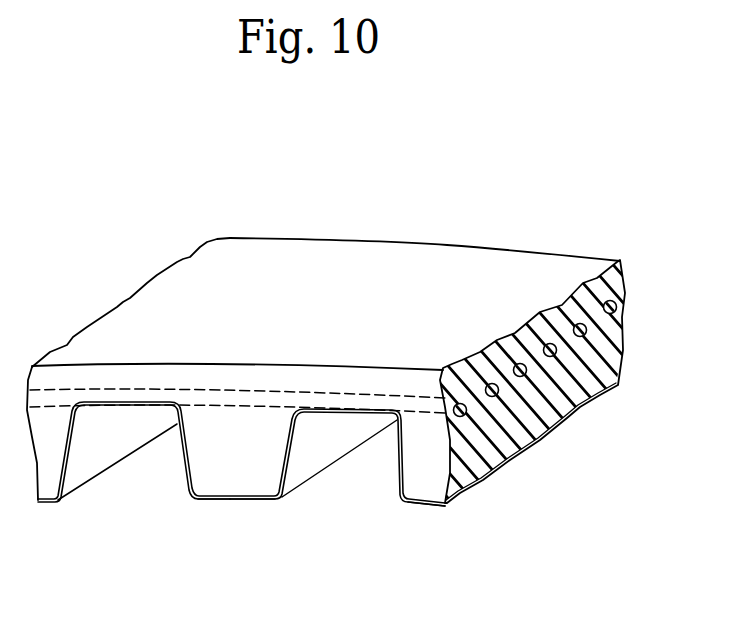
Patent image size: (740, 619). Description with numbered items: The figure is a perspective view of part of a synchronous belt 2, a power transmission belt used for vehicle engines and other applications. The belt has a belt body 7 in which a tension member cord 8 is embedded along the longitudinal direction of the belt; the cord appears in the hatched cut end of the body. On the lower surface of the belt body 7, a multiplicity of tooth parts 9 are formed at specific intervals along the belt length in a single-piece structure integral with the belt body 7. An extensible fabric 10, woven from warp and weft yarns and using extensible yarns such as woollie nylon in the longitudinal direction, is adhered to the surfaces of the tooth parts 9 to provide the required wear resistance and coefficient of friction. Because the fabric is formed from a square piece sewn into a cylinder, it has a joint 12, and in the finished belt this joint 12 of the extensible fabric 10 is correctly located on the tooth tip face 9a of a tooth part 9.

The synchronous belt 2 is at (358, 171).
The belt body 7 is at (518, 249).
The tension member cord 8 is at (582, 336).
The tooth parts 9 is at (52, 478).
The tooth tip face 9a is at (213, 500).
The extensible fabric 10 is at (426, 507).
The joint 12 is at (237, 500).